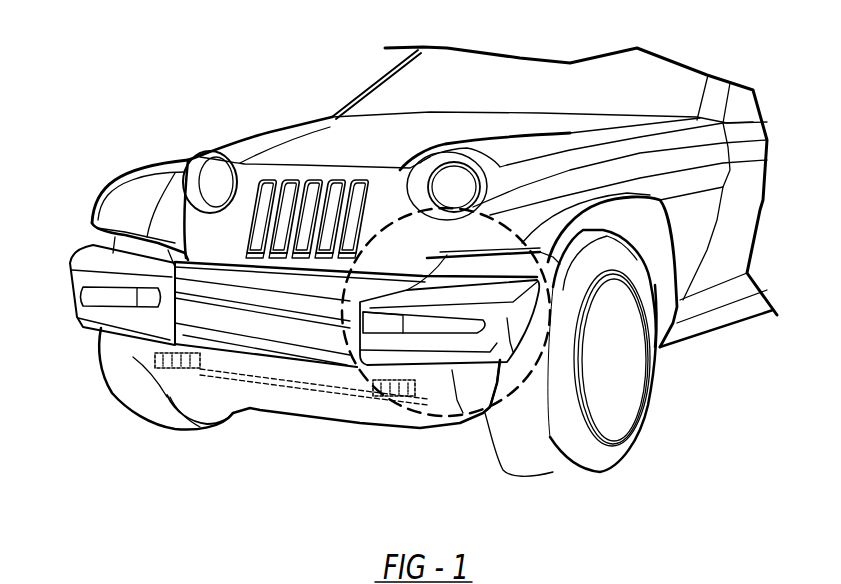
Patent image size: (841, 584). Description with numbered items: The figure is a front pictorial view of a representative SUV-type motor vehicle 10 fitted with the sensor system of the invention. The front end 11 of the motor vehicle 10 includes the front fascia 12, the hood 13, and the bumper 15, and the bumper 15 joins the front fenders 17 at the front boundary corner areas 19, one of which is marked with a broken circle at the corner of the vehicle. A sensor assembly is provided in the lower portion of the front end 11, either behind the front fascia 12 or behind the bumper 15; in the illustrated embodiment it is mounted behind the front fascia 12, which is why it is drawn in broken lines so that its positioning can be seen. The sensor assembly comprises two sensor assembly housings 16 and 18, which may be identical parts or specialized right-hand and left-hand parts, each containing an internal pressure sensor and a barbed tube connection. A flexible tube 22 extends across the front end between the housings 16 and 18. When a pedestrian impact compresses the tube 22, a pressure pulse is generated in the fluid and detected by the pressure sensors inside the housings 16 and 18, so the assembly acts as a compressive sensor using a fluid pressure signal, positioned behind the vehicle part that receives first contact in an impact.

The motor vehicle 10 is at (323, 70).
The front end 11 is at (296, 393).
The front fascia 12 is at (343, 413).
The hood 13 is at (252, 143).
The bumper 15 is at (118, 313).
The sensor assembly housing 16 is at (163, 373).
The front fender 17 is at (143, 197).
The sensor assembly housing 18 is at (409, 400).
The front boundary (corner) area 19 is at (520, 388).
The flexible tube 22 is at (303, 378).